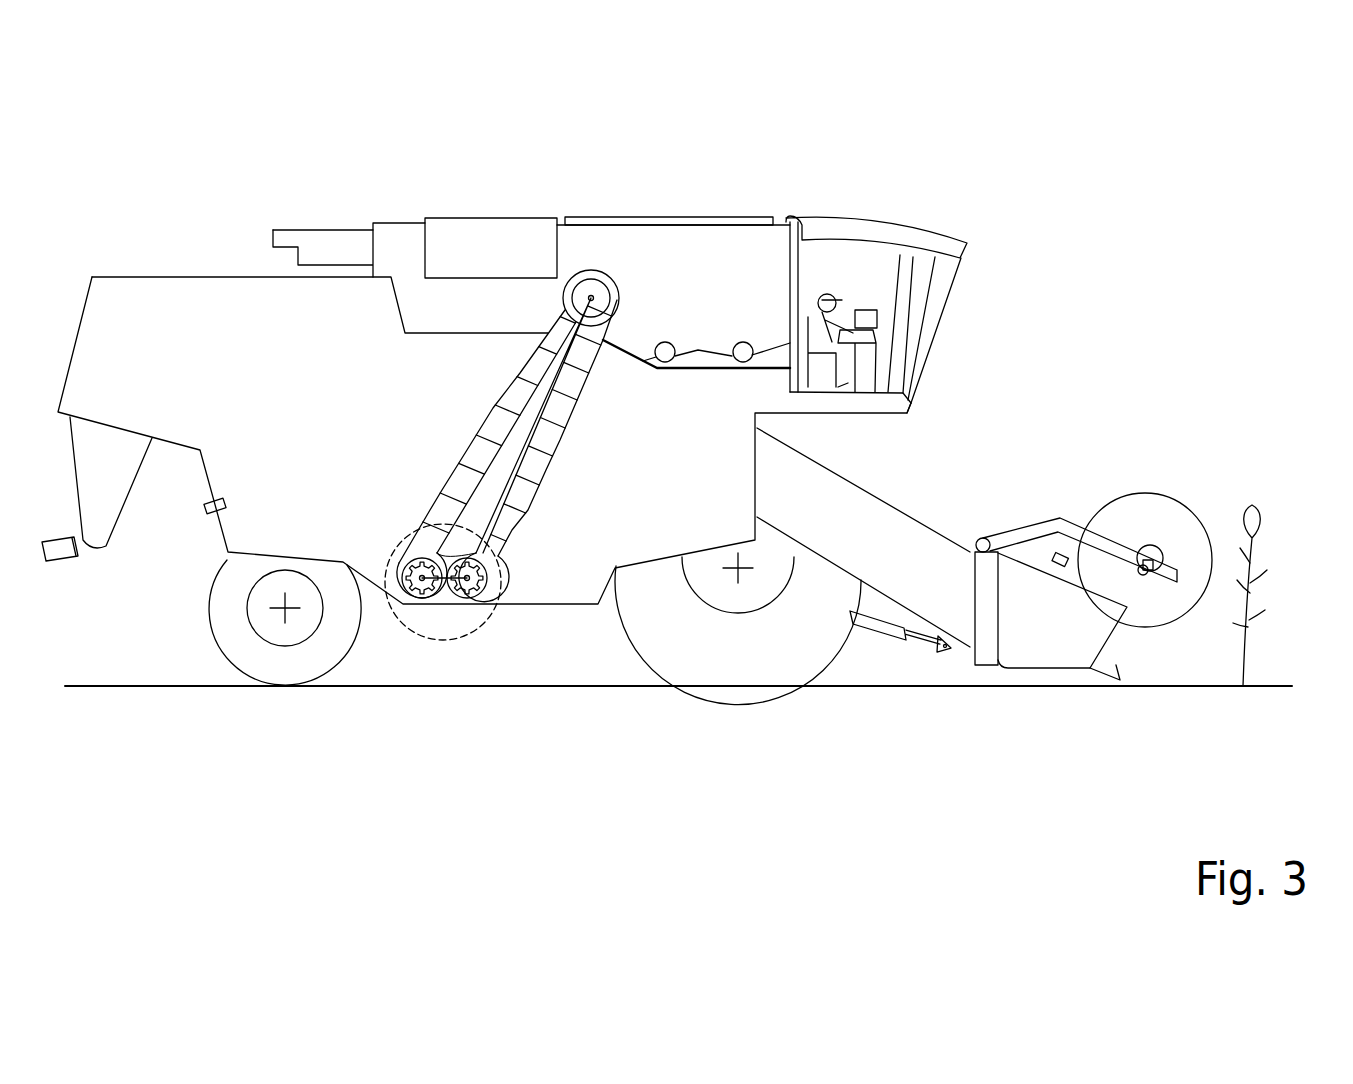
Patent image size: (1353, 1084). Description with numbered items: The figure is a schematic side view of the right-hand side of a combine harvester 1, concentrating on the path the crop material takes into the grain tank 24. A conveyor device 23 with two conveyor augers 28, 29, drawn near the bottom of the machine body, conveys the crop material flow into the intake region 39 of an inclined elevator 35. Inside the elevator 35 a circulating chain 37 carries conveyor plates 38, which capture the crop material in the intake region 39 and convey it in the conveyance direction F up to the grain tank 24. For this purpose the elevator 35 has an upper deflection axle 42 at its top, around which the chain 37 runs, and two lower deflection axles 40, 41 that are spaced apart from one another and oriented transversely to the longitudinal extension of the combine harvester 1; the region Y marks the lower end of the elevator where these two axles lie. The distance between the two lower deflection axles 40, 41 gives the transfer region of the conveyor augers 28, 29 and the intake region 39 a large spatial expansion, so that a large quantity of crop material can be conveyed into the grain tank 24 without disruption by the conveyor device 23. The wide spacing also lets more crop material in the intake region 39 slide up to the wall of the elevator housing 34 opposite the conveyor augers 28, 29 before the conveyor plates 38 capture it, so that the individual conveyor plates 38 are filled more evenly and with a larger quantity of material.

The combine harvester 1 is at (138, 194).
The conveyor device 23 is at (480, 421).
The grain tank 24 is at (724, 293).
The conveyor auger 28 is at (402, 567).
The conveyor auger 29 is at (482, 574).
The elevator housing 34 is at (507, 434).
The elevator 35 is at (527, 480).
The circulating chain 37 is at (563, 378).
The conveyor plates 38 is at (545, 433).
The intake region 39 is at (442, 594).
The lower deflection axle 40 is at (407, 603).
The lower deflection axle 41 is at (485, 603).
The upper deflection axle 42 is at (592, 295).
The conveyance direction F is at (543, 512).
The region of lower sprockets Y is at (475, 628).